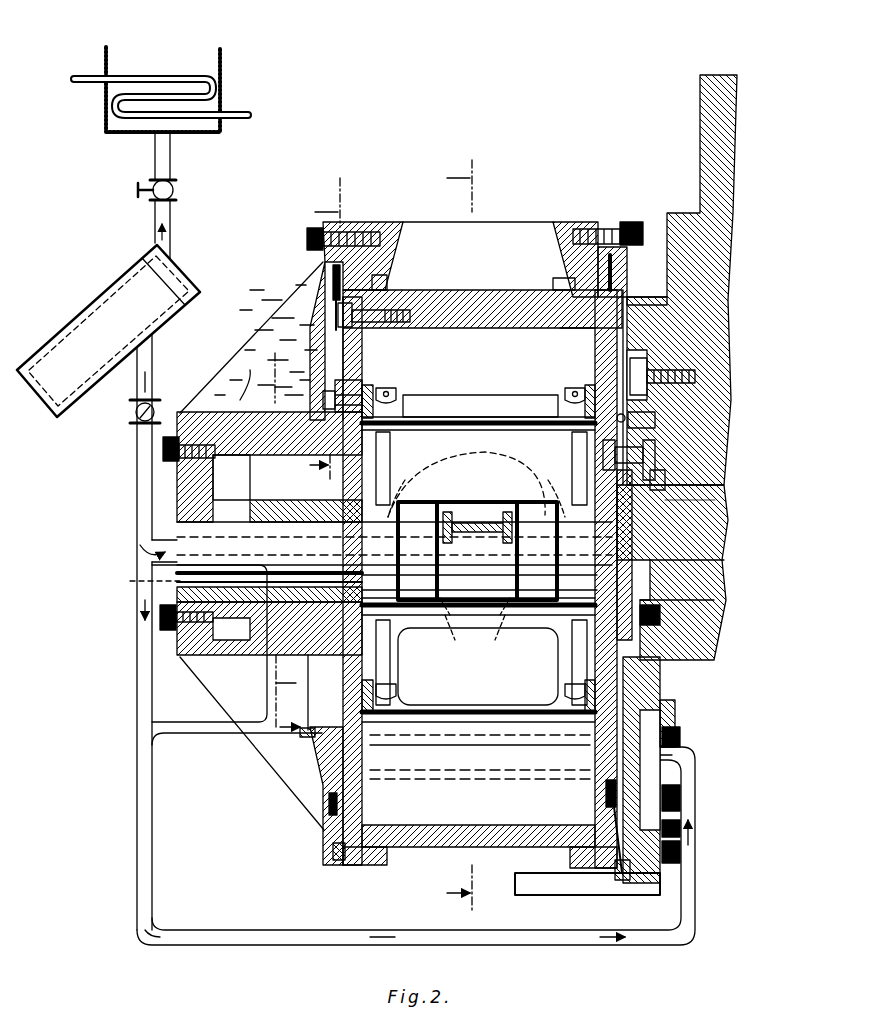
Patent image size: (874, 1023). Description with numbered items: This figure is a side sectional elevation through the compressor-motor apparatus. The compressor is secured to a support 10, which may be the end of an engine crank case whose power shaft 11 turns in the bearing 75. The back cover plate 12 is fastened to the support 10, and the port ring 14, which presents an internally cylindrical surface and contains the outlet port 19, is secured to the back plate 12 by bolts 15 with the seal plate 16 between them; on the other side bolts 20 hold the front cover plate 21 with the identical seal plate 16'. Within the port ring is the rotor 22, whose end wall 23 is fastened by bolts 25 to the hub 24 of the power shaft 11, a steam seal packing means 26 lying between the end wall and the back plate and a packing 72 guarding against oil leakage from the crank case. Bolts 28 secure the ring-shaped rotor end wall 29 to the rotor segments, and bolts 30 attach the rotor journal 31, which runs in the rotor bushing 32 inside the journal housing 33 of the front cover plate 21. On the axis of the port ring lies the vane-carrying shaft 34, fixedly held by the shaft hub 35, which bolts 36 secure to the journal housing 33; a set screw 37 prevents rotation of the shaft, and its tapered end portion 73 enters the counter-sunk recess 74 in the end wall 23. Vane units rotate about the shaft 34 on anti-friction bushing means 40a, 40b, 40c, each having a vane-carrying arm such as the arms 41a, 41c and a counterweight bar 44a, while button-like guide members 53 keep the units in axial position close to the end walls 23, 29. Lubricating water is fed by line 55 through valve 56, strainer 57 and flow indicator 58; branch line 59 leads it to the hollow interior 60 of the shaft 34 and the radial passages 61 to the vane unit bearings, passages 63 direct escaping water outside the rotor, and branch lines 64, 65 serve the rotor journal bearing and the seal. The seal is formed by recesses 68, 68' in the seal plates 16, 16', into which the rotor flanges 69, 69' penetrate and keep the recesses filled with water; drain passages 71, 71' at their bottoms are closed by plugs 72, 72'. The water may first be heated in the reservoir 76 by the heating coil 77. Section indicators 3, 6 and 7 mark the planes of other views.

The support 10 is at (706, 114).
The power shaft 11 is at (725, 521).
The back cover plate 12 is at (650, 320).
The port ring 14 is at (570, 222).
The bolts 15 is at (637, 224).
The seal plate 16 is at (605, 236).
The seal plate 16' is at (363, 231).
The outlet port 19 is at (695, 374).
The bolts 20 is at (307, 238).
The front cover plate 21 is at (300, 307).
The rotor 22 is at (486, 290).
The end wall 23 is at (598, 381).
The hub 24 is at (665, 490).
The bolts 25 is at (655, 452).
The steam seal packing means 26 is at (655, 425).
The bolts 28 is at (410, 318).
The rotor end wall 29 is at (362, 353).
The bolts 30 is at (362, 383).
The rotor journal 31 is at (280, 452).
The rotor bushing 32 is at (252, 410).
The journal housing 33 is at (235, 410).
The vane-carrying shaft 34 is at (318, 522).
The shaft hub 35 is at (230, 500).
The bolts 36 is at (163, 450).
The set screw 37 is at (252, 504).
The anti-friction bushing means 40a is at (481, 568).
The anti-friction bushing means 40b is at (500, 470).
The anti-friction bushing means 40c is at (455, 512).
The vane-carrying arm 41a is at (398, 656).
The vane-carrying arm 41c is at (490, 522).
The counterweight bar 44a is at (478, 406).
The guide members 53 is at (396, 394).
The line 55 is at (172, 220).
The valve 56 is at (172, 186).
The fine mesh strainer 57 is at (110, 292).
The flow indicator 58 is at (128, 410).
The branch line 59 is at (138, 543).
The hollow interior 60 is at (175, 591).
The radial passages 61 is at (482, 622).
The passages 63 is at (597, 346).
The branch line 64 is at (193, 740).
The branch line 65 is at (268, 688).
The recess 68 is at (510, 551).
The recess 68' is at (299, 296).
The flange 69 is at (543, 272).
The flange 69' is at (403, 275).
The drain passage 71 is at (539, 770).
The drain passage 71' is at (261, 761).
The plug 72 is at (637, 748).
The plug 72' is at (347, 871).
The tapered end portion 73 is at (625, 541).
The counter-sunk recess 74 is at (690, 513).
The bearing 75 is at (728, 556).
The reservoir 76 is at (222, 68).
The heating coil 77 is at (162, 80).
The section line 3 is at (459, 529).
The section line 6 is at (287, 541).
The section line 7 is at (325, 334).